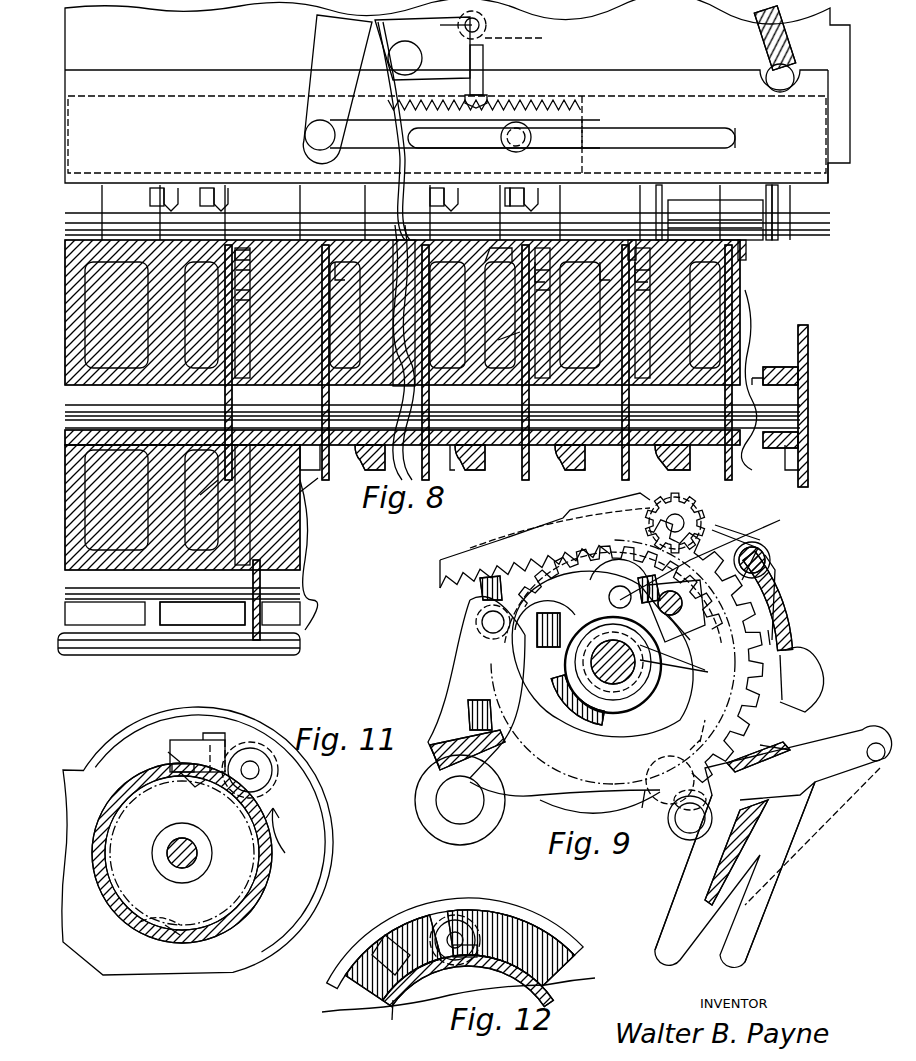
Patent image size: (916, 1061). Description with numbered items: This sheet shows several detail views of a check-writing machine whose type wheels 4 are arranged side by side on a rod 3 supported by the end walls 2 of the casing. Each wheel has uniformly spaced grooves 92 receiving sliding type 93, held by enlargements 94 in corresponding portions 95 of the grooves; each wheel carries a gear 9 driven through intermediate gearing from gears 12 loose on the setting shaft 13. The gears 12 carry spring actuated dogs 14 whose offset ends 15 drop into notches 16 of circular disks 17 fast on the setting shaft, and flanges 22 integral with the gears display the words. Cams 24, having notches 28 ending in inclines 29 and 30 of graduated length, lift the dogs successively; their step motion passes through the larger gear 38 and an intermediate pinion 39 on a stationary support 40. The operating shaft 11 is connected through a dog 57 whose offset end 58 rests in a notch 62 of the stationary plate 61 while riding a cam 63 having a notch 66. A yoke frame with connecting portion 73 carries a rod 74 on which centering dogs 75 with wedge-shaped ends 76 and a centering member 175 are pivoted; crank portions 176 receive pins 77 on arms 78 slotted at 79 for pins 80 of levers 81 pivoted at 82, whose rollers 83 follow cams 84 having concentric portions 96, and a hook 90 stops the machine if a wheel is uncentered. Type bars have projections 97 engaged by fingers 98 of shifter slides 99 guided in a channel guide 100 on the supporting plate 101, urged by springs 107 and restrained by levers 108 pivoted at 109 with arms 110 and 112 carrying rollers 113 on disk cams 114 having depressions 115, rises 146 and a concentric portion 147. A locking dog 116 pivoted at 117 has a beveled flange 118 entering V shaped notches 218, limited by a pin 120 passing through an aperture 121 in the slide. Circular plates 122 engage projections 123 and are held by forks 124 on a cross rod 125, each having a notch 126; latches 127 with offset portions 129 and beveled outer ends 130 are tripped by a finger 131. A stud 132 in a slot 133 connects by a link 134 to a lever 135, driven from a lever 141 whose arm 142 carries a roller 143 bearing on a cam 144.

In FIG. 8, the end walls 2 is at (816, 352).
In FIG. 8, the rod 3 is at (432, 411).
In FIG. 8, the type wheels 4 is at (85, 338).
In FIG. 8, the gear 9 is at (250, 290).
In FIG. 9, the operating shaft 11 is at (630, 672).
In FIG. 11, the gears 12 is at (182, 865).
In FIG. 11, the setting shaft 13 is at (182, 865).
In FIG. 11, the dogs 14 is at (185, 748).
In FIG. 11, the offset ends 15 is at (185, 756).
In FIG. 11, the notches 16 is at (157, 749).
In FIG. 11, the circular disks 17 is at (165, 853).
In FIG. 11, the flanges 22 is at (327, 845).
In FIG. 11, the cams 24 is at (262, 890).
In FIG. 11, the notches 28 is at (188, 782).
In FIG. 11, the incline 29 is at (232, 778).
In FIG. 11, the incline 30 is at (175, 935).
In FIG. 9, the gear 38 is at (614, 584).
In FIG. 9, the intermediate pinion 39 is at (690, 510).
In FIG. 9, the stationary support 40 is at (748, 680).
In FIG. 12, the dog 57 is at (393, 957).
In FIG. 12, the offset end 58 is at (392, 1020).
In FIG. 12, the stationary plate 61 is at (540, 950).
In FIG. 12, the notch 62 is at (478, 928).
In FIG. 12, the cam 63 is at (458, 988).
In FIG. 11, the notch 66 is at (150, 925).
In FIG. 12, the notch 66 is at (412, 985).
In FIG. 9, the connecting portion 73 is at (790, 595).
In FIG. 9, the rod 74 is at (770, 555).
In FIG. 9, the centering dogs 75 is at (745, 525).
In FIG. 9, the wedge-shaped ends 76 is at (780, 640).
In FIG. 9, the pins 77 is at (689, 633).
In FIG. 9, the arms 78 is at (625, 581).
In FIG. 9, the slot 79 is at (608, 596).
In FIG. 9, the pins 80 is at (700, 560).
In FIG. 9, the levers 81 is at (482, 750).
In FIG. 9, the pivot 82 is at (460, 800).
In FIG. 9, the rollers 83 is at (487, 628).
In FIG. 9, the cams 84 is at (602, 661).
In FIG. 9, the hook 90 is at (812, 688).
In FIG. 8, the grooves 92 is at (722, 210).
In FIG. 8, the sliding type 93 is at (447, 405).
In FIG. 8, the enlargements 94 is at (447, 403).
In FIG. 8, the portions of the grooves 95 is at (715, 229).
In FIG. 9, the concentric portions 96 is at (682, 663).
In FIG. 8, the projections 97 is at (510, 198).
In FIG. 8, the fingers 98 is at (220, 180).
In FIG. 8, the shifter slides 99 is at (578, 137).
In FIG. 8, the channel guide 100 is at (532, 127).
In FIG. 8, the supporting plate 101 is at (457, 91).
In FIG. 8, the springs 107 is at (762, 40).
In FIG. 9, the levers 108 is at (773, 847).
In FIG. 9, the pivot 109 is at (812, 836).
In FIG. 9, the arms 110 is at (735, 940).
In FIG. 9, the arms 112 is at (701, 800).
In FIG. 9, the rollers 113 is at (690, 840).
In FIG. 9, the disk cams 114 is at (636, 809).
In FIG. 9, the circumferential depressions 115 is at (480, 590).
In FIG. 8, the locking dog 116 is at (405, 58).
In FIG. 8, the pivot 117 is at (395, 28).
In FIG. 8, the beveled flange 118 is at (478, 70).
In FIG. 8, the pin 120 is at (531, 39).
In FIG. 8, the pivot 121 is at (486, 25).
In FIG. 8, the circular plate 122 is at (455, 25).
In FIG. 8, the projections 123 is at (505, 280).
In FIG. 8, the forks 124 is at (260, 610).
In FIG. 8, the cross rod 125 is at (285, 640).
In FIG. 8, the notch 126 is at (612, 275).
In FIG. 8, the latch 127 is at (232, 328).
In FIG. 8, the offset portion 129 is at (636, 232).
In FIG. 8, the outer end 130 is at (662, 200).
In FIG. 8, the finger 131 is at (778, 192).
In FIG. 8, the stud 132 is at (520, 145).
In FIG. 8, the slot 133 is at (645, 138).
In FIG. 8, the link 134 is at (368, 132).
In FIG. 8, the lever 135 is at (337, 89).
In FIG. 9, the lever 141 is at (690, 925).
In FIG. 9, the arm 142 is at (760, 745).
In FIG. 9, the roller 143 is at (688, 736).
In FIG. 9, the cam 144 is at (663, 779).
In FIG. 9, the rises 146 is at (550, 659).
In FIG. 9, the concentric portion 147 is at (600, 799).
In FIG. 9, the centering member 175 is at (789, 680).
In FIG. 9, the crank portions 176 is at (676, 609).
In FIG. 8, the V shaped notches 218 is at (545, 105).